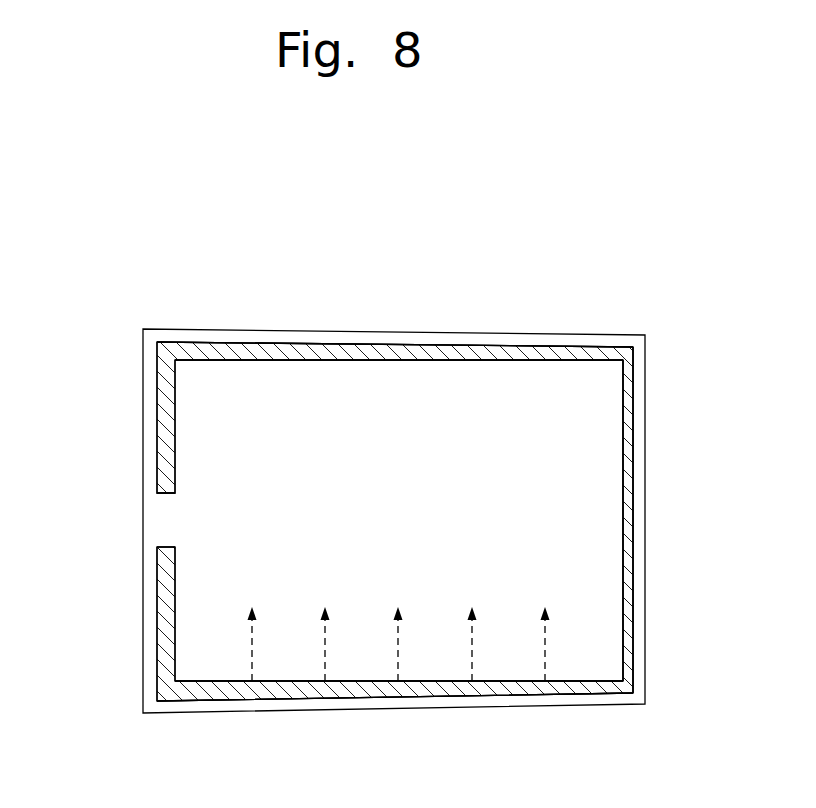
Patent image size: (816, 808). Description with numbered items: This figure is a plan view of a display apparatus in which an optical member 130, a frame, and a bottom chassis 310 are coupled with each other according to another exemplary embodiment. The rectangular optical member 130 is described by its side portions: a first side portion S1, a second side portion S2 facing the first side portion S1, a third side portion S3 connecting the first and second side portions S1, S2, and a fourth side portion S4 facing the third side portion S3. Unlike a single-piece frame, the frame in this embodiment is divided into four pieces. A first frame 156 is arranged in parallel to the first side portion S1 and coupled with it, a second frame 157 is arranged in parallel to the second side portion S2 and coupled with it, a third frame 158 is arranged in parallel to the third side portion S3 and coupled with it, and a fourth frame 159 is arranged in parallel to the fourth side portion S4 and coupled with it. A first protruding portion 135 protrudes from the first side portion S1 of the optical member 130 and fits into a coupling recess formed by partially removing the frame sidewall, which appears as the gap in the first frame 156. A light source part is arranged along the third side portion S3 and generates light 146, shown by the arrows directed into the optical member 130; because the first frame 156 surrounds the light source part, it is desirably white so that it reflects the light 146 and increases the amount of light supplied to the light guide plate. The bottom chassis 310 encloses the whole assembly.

The optical member 130 is at (430, 345).
The first protruding portion 135 is at (155, 521).
The light 146 is at (397, 637).
The first frame 156 is at (157, 423).
The second frame 157 is at (628, 517).
The third frame 158 is at (425, 690).
The fourth frame 159 is at (498, 345).
The bottom chassis 310 is at (566, 326).
The first side portion S1 is at (167, 600).
The second side portion S2 is at (628, 580).
The third side portion S3 is at (515, 688).
The fourth side portion S4 is at (290, 344).